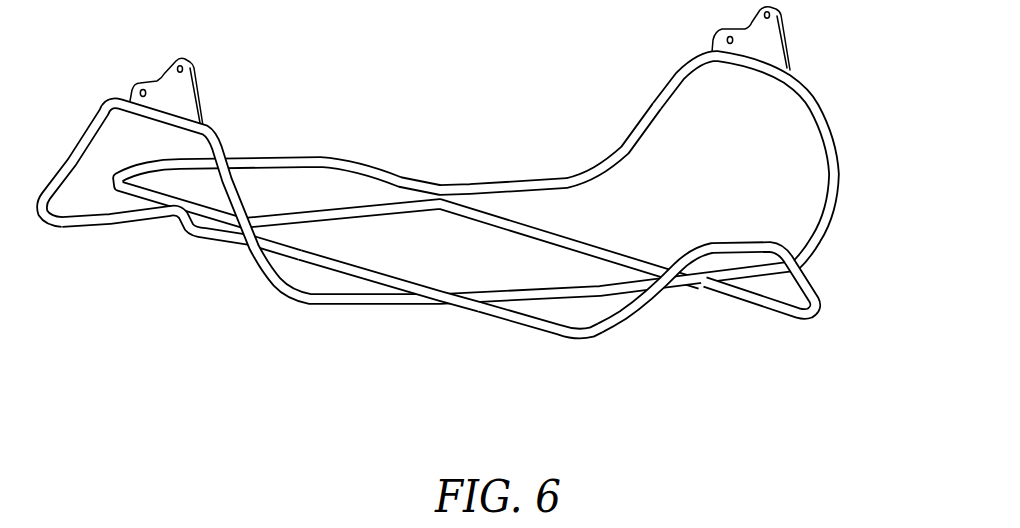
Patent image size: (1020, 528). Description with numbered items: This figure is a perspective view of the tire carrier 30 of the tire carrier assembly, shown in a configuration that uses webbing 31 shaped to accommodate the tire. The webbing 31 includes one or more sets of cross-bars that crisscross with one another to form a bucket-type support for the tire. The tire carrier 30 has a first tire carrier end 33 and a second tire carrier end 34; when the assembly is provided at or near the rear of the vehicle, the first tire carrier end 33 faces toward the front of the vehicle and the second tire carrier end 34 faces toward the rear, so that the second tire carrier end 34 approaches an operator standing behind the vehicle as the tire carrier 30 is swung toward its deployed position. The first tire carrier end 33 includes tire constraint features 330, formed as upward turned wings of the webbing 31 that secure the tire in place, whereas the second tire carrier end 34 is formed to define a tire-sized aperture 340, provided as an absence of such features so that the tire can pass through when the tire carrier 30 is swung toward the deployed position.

The tire carrier 30 is at (471, 223).
The webbing 31 is at (460, 292).
The first tire carrier end 33 is at (110, 206).
The second tire carrier end 34 is at (481, 337).
The tire constraint features 330 is at (288, 242).
The tire-sized aperture 340 is at (299, 145).